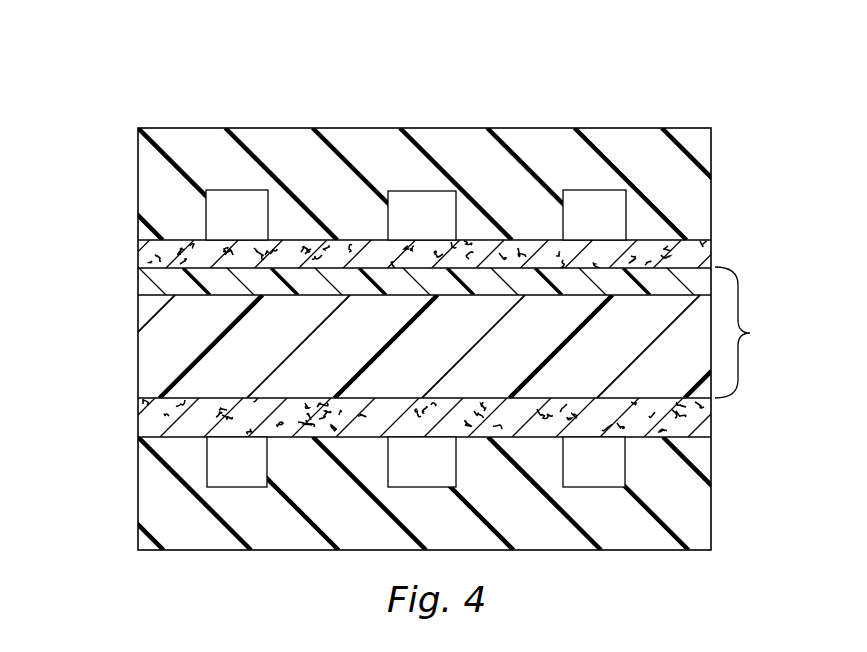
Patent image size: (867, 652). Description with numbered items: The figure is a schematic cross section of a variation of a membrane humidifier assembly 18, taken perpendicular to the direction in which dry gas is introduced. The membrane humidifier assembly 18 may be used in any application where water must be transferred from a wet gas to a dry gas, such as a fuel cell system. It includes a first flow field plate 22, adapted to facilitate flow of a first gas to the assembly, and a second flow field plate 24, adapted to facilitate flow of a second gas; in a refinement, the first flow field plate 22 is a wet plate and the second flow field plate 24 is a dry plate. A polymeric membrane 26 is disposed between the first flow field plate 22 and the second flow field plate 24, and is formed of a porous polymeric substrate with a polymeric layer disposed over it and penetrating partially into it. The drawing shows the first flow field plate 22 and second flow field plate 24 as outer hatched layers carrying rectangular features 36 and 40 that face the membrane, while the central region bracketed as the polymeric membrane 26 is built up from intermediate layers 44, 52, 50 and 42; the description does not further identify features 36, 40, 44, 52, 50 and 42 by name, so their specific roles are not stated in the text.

The membrane humidifier assembly 18 is at (248, 90).
The first flow field plate 22 is at (505, 128).
The protrusions 36 is at (412, 196).
The first adhesive layer 44 is at (141, 252).
The intermediate film layer 52 is at (142, 284).
The core layer 50 is at (138, 331).
The polymeric membrane 26 is at (746, 332).
The second adhesive layer 42 is at (323, 436).
The protrusions 40 is at (208, 485).
The second flow field plate 24 is at (342, 552).